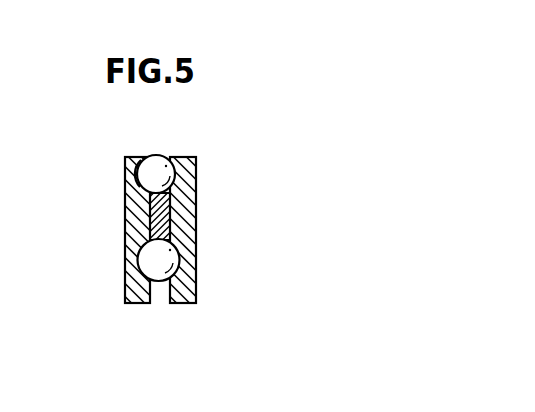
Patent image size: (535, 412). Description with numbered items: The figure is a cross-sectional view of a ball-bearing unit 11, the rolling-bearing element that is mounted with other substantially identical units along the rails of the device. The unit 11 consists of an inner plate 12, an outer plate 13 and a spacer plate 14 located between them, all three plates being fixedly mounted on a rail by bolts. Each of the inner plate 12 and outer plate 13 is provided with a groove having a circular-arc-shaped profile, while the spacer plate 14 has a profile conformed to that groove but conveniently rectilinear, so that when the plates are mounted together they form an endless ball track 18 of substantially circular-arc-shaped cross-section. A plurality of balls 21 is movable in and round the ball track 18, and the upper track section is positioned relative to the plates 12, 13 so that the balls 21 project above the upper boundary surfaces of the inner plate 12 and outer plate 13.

The ball-bearing unit 11 is at (201, 164).
The inner plate 12 is at (125, 218).
The outer plate 13 is at (196, 182).
The spacer plate 14 is at (171, 204).
The endless ball track 18 is at (148, 152).
The ball 21 is at (161, 154).